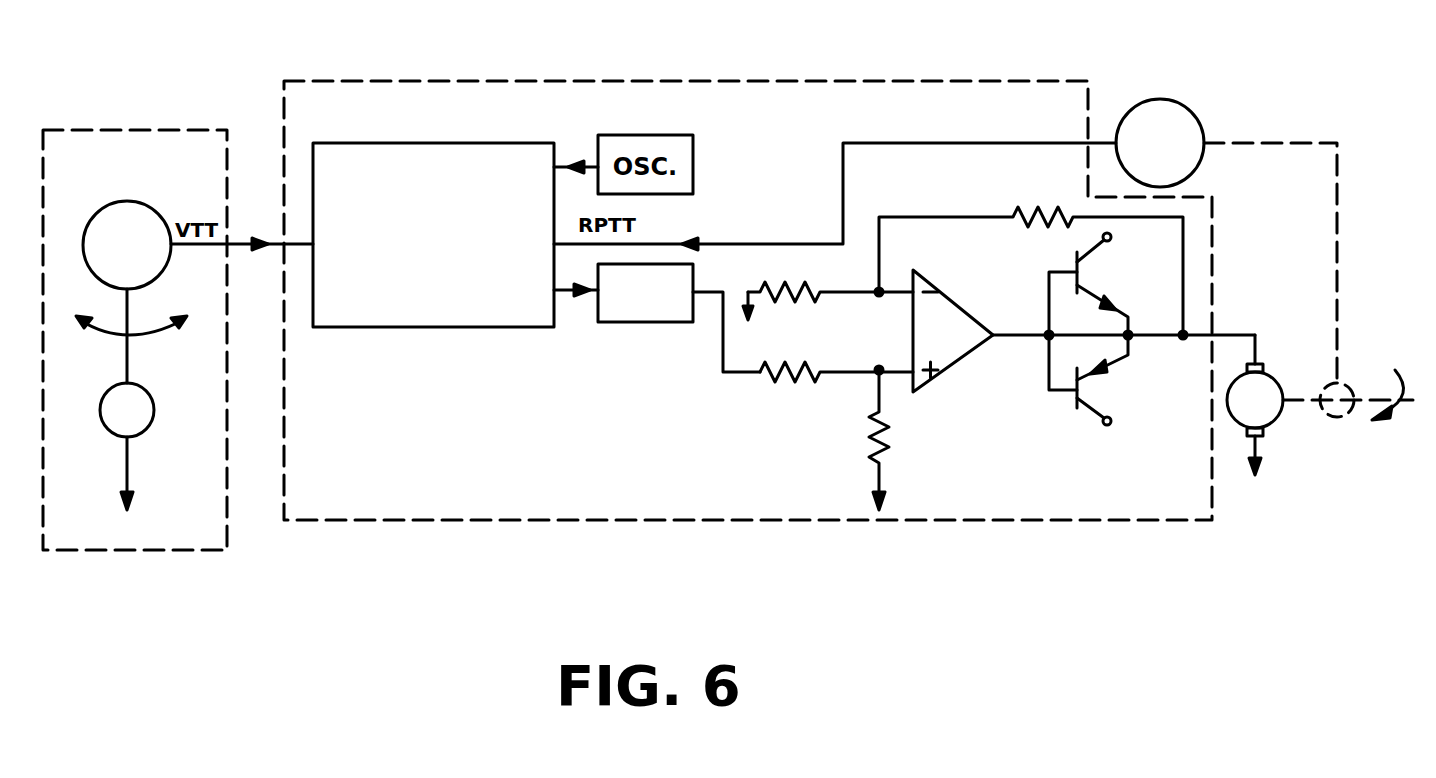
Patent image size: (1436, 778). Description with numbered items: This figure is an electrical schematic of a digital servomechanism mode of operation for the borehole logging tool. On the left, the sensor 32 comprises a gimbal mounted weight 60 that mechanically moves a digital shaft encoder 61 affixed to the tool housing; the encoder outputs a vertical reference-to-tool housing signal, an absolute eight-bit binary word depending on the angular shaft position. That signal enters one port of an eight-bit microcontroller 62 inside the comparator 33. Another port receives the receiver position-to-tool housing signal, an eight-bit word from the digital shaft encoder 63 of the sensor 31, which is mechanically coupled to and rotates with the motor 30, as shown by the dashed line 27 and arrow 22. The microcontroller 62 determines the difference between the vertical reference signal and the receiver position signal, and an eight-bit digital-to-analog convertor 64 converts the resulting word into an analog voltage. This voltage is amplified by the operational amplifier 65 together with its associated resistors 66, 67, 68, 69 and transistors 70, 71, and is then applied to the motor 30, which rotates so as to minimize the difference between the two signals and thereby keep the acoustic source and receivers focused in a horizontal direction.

The arrow 22 is at (1388, 381).
The dashed line 27 is at (1290, 402).
The motor 30 is at (1275, 378).
The sensor 31 is at (1176, 95).
The sensor 32 is at (152, 130).
The comparator 33 is at (863, 80).
The gimbal mounted weight 60 is at (153, 400).
The digital shaft encoder 61 is at (146, 282).
The microcontroller 62 is at (425, 142).
The digital shaft encoder 63 is at (1192, 112).
The digital-to-analog convertor 64 is at (678, 323).
The operational amplifier 65 is at (920, 387).
The resistor 66 is at (816, 300).
The resistor 67 is at (773, 380).
The resistor 68 is at (851, 440).
The resistor 69 is at (1036, 207).
The transistor 70 is at (1083, 272).
The transistor 71 is at (1083, 392).